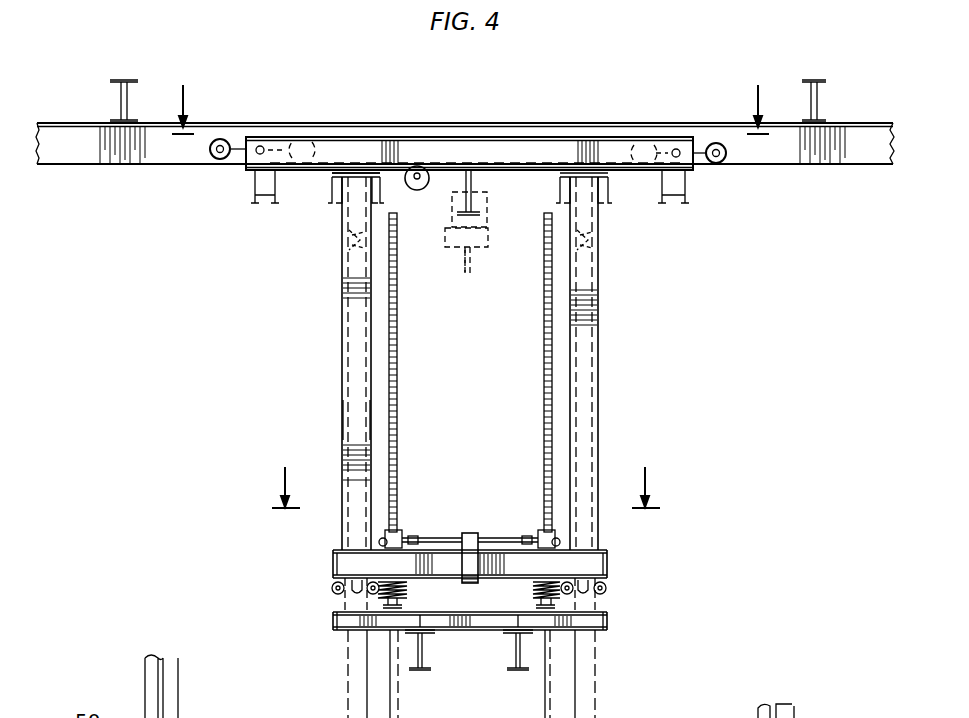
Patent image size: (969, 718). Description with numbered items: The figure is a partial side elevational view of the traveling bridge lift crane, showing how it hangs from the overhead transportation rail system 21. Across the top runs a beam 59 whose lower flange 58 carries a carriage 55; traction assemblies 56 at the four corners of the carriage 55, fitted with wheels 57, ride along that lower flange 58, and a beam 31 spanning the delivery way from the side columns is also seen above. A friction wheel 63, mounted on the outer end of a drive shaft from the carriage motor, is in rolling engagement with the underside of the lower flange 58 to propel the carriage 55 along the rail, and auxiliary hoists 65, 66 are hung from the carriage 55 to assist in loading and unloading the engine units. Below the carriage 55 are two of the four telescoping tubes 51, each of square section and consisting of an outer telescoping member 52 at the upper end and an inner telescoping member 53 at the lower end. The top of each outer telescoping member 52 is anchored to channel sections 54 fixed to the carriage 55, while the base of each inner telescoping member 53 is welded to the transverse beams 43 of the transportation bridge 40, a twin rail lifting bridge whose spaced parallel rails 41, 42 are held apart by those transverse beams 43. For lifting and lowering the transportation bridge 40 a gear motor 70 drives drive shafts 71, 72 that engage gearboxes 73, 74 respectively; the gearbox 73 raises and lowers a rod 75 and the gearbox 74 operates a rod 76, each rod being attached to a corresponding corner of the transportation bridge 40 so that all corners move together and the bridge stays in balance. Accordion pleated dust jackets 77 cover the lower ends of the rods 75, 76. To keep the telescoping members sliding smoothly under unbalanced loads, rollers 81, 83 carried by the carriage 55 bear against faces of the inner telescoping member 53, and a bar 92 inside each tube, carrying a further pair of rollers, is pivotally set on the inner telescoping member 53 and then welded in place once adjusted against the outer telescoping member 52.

The overhead transportation rail system 21 is at (365, 135).
The beam 31 is at (118, 100).
The transportation bridge 40 is at (624, 603).
The rail 41 is at (421, 672).
The rail 42 is at (519, 672).
The transverse beam 43 is at (480, 636).
The telescoping tube 51 is at (334, 346).
The outer telescoping member 52 is at (344, 381).
The inner telescoping member 53 is at (350, 605).
The channel section 54 is at (340, 205).
The carriage 55 is at (528, 138).
The traction assembly 56 is at (232, 148).
The wheel 57 is at (219, 160).
The lower flange 58 is at (128, 186).
The beam 59 is at (838, 125).
The friction wheel 63 is at (417, 191).
The auxiliary hoist 65 is at (462, 247).
The auxiliary hoist 66 is at (472, 277).
The gear motor 70 is at (470, 532).
The drive shaft 71 is at (434, 534).
The drive shaft 72 is at (498, 534).
The gearbox 73 is at (378, 543).
The gearbox 74 is at (560, 540).
The rod 75 is at (398, 350).
The rod 76 is at (543, 353).
The accordion pleated dust jacket 77 is at (409, 593).
The roller 81 is at (333, 585).
The roller 83 is at (607, 590).
The bar 92 is at (348, 247).